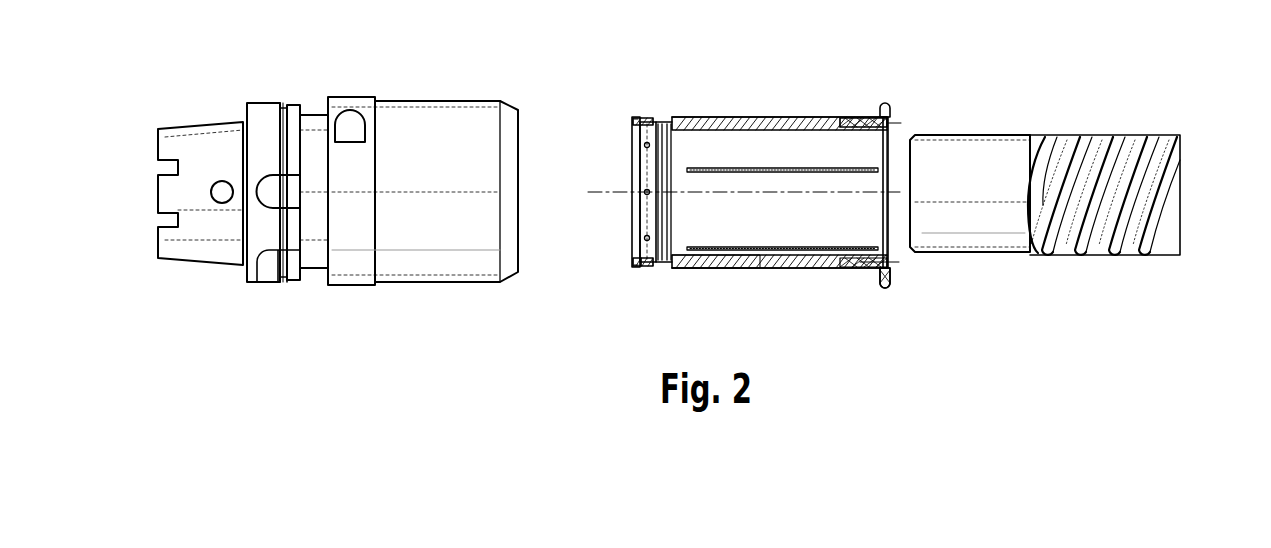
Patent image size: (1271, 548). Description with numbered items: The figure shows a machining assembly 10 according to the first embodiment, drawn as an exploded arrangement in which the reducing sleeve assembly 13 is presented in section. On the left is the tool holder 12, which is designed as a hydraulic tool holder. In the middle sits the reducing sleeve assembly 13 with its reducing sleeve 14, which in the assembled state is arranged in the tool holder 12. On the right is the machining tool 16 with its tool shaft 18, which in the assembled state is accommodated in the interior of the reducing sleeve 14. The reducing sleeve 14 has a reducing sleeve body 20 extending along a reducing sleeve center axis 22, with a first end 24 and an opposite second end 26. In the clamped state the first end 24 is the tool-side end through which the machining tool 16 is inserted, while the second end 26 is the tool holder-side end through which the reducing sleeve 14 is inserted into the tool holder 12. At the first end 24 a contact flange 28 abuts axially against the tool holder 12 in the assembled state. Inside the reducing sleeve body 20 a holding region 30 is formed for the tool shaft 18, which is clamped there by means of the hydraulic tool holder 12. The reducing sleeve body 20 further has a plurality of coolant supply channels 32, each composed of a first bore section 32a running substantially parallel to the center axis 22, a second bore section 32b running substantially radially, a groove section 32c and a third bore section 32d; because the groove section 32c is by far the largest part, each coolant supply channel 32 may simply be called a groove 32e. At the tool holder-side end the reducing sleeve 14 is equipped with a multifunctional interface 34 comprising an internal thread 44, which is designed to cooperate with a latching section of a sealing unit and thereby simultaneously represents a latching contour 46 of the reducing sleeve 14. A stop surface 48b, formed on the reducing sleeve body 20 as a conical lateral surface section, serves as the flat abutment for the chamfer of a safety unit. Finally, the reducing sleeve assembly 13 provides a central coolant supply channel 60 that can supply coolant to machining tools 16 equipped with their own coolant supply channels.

The machining assembly 10 is at (1049, 137).
The tool holder 12 is at (404, 79).
The reducing sleeve assembly 13 is at (745, 100).
The reducing sleeve 14 is at (779, 192).
The machining tool 16 is at (1054, 105).
The tool shaft 18 is at (982, 116).
The reducing sleeve body 20 is at (722, 118).
The reducing sleeve center axis 22 is at (595, 193).
The first end 24 is at (909, 127).
The second end 26 is at (580, 132).
The contact flange 28 is at (898, 88).
The holding region 30 is at (864, 236).
The coolant supply channel 32 is at (815, 116).
The first bore section 32a is at (630, 281).
The second bore section 32b is at (654, 282).
The groove section 32c is at (750, 270).
The third bore section 32d is at (882, 280).
The groove 32e is at (863, 122).
The multifunctional interface 34 is at (638, 144).
The internal thread 44 is at (633, 246).
The latching contour 46 is at (643, 121).
The stop surface 48b is at (665, 127).
The central coolant supply channel 60 is at (623, 180).